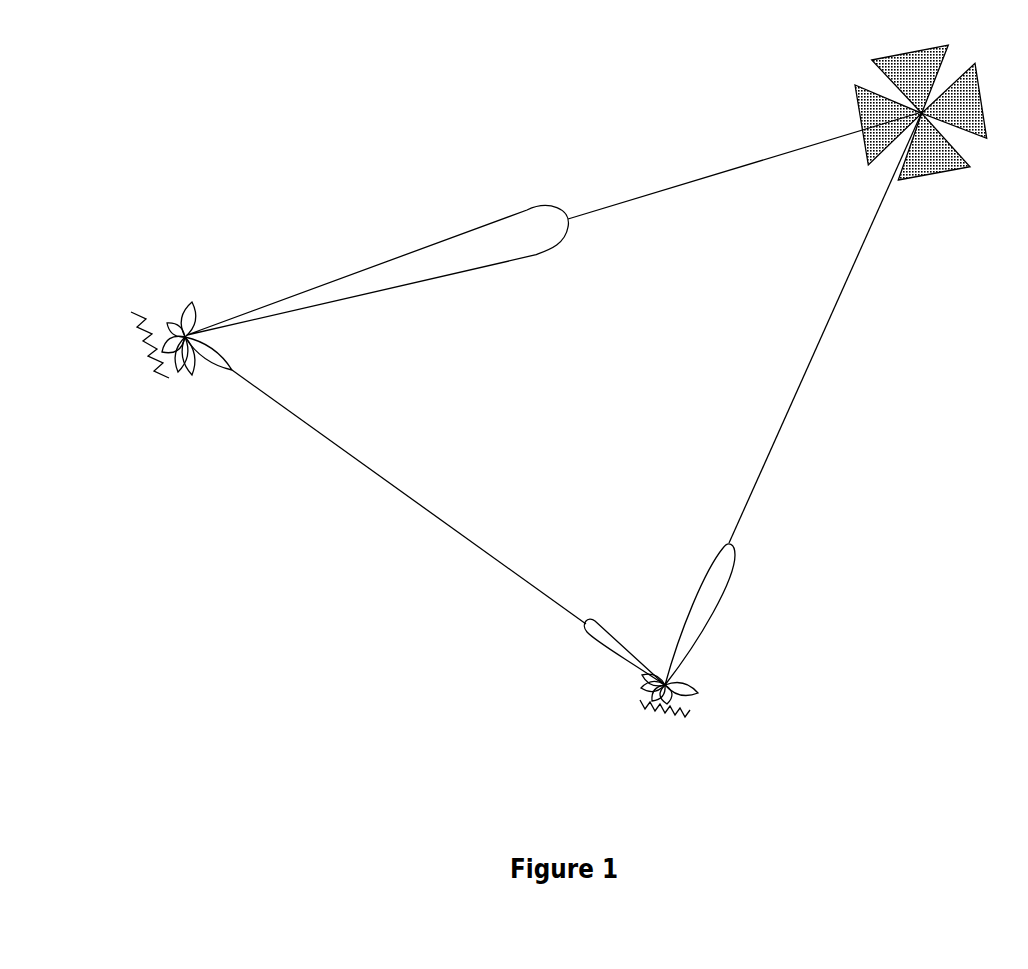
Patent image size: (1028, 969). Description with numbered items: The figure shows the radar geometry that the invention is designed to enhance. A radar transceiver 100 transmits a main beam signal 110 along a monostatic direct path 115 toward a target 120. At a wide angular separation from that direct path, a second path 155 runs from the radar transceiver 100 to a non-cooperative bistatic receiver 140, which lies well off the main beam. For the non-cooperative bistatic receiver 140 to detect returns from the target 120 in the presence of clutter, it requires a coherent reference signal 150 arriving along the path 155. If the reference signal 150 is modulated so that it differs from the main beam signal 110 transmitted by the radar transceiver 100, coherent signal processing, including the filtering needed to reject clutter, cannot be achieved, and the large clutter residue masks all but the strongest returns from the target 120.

The radar transceiver 100 is at (131, 352).
The main beam signal 110 is at (377, 272).
The monostatic direct path 115 is at (728, 165).
The target 120 is at (840, 109).
The non-cooperative bistatic receiver 140 is at (616, 721).
The coherent reference signal 150 is at (577, 659).
The path to non-cooperative bistatic receiver 155 is at (409, 497).